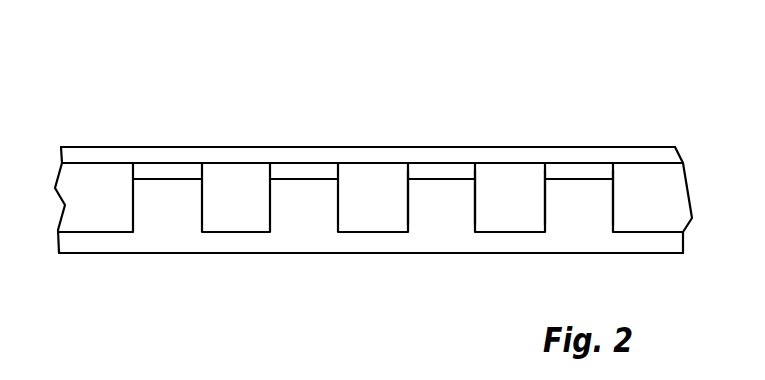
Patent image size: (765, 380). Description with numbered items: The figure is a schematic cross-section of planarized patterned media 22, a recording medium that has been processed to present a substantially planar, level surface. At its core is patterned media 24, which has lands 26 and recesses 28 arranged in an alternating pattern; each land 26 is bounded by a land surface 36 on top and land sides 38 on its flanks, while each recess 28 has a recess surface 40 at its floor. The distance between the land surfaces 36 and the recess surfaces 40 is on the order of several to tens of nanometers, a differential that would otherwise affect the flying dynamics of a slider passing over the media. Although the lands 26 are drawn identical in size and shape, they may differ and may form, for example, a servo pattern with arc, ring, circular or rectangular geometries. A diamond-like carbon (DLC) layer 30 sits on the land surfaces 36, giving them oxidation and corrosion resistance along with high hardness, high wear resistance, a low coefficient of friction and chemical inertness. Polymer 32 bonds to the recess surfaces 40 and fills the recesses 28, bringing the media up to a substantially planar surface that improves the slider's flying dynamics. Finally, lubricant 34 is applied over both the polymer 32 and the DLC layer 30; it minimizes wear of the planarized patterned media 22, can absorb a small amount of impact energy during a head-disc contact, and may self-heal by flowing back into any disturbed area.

The planarized patterned media 22 is at (368, 163).
The patterned media 24 is at (143, 255).
The lands 26 is at (188, 221).
The recesses 28 is at (101, 210).
The diamond-like carbon (DLC) layer 30 is at (162, 173).
The polymer 32 is at (78, 178).
The lubricant 34 is at (110, 155).
The land surfaces 36 is at (293, 157).
The land sides 38 is at (408, 201).
The recess surfaces 40 is at (363, 233).